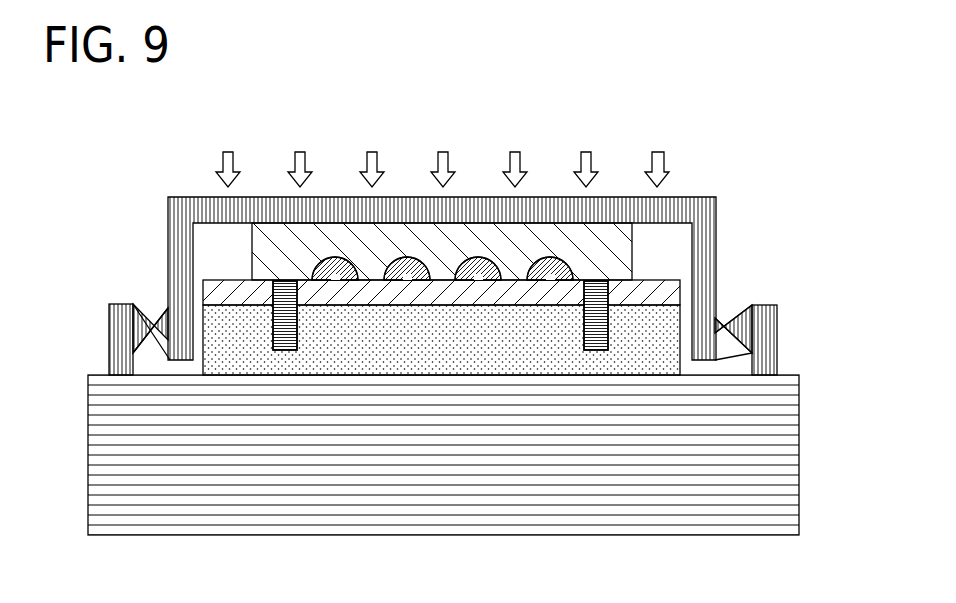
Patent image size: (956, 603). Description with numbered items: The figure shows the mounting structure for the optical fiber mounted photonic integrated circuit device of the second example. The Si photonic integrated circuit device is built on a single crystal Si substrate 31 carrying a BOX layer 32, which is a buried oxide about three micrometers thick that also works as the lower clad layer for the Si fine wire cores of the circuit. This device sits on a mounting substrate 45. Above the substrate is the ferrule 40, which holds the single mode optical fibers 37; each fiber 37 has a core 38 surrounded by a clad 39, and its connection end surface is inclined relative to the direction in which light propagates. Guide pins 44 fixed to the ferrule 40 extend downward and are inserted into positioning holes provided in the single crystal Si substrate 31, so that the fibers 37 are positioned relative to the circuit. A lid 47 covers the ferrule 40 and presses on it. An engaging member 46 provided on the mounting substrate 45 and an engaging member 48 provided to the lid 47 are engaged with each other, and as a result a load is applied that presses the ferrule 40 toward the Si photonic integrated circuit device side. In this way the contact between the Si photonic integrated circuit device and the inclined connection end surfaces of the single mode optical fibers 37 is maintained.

The single crystal Si substrate 31 is at (215, 363).
The BOX layer 32 is at (207, 291).
The single mode optical fiber 37 is at (436, 166).
The core 38 is at (333, 270).
The clad 39 is at (345, 256).
The ferrule 40 is at (483, 232).
The guide pins 44 is at (287, 352).
The mounting substrate 45 is at (795, 433).
The engaging member 46 is at (777, 338).
The lid 47 is at (712, 210).
The engaging member 48 is at (712, 333).